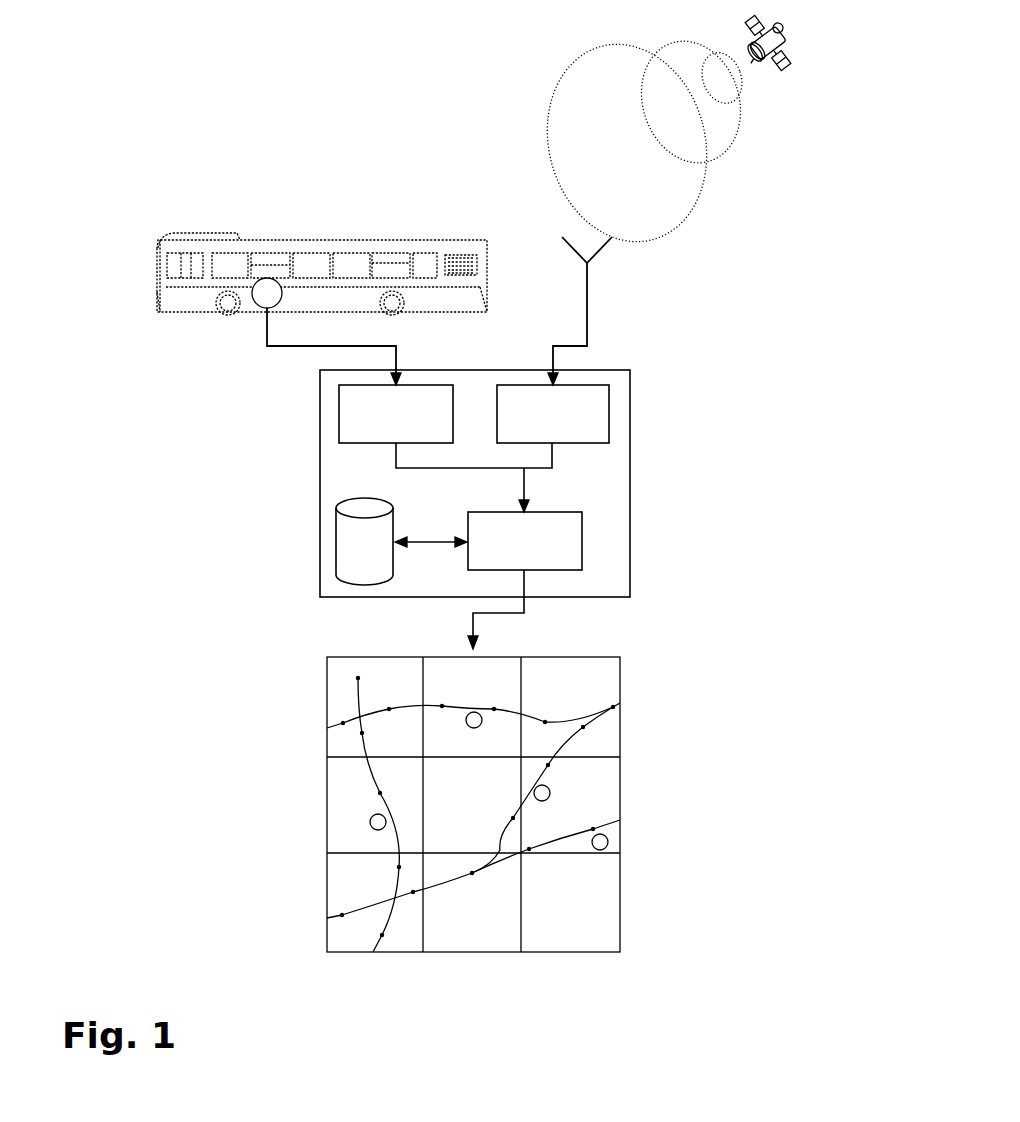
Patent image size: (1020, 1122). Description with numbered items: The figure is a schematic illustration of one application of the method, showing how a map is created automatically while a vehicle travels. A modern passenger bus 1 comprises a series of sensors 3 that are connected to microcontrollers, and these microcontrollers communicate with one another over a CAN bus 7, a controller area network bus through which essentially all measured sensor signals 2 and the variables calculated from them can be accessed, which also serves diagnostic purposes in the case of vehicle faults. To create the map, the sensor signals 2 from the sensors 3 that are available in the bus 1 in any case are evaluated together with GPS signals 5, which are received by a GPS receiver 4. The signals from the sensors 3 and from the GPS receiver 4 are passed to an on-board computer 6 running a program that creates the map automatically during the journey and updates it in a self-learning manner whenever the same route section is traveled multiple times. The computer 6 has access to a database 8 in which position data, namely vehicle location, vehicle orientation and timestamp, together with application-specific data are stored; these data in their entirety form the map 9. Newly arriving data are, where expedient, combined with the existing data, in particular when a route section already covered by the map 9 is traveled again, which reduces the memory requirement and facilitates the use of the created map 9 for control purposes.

The passenger bus 1 is at (160, 208).
The sensor signals 2 is at (280, 349).
The sensors 3 is at (262, 303).
The GPS receiver 4 is at (553, 414).
The GPS signals 5 is at (586, 315).
The on-board computer 6 is at (525, 541).
The CAN bus 7 is at (396, 414).
The database 8 is at (364, 541).
The map 9 is at (336, 888).